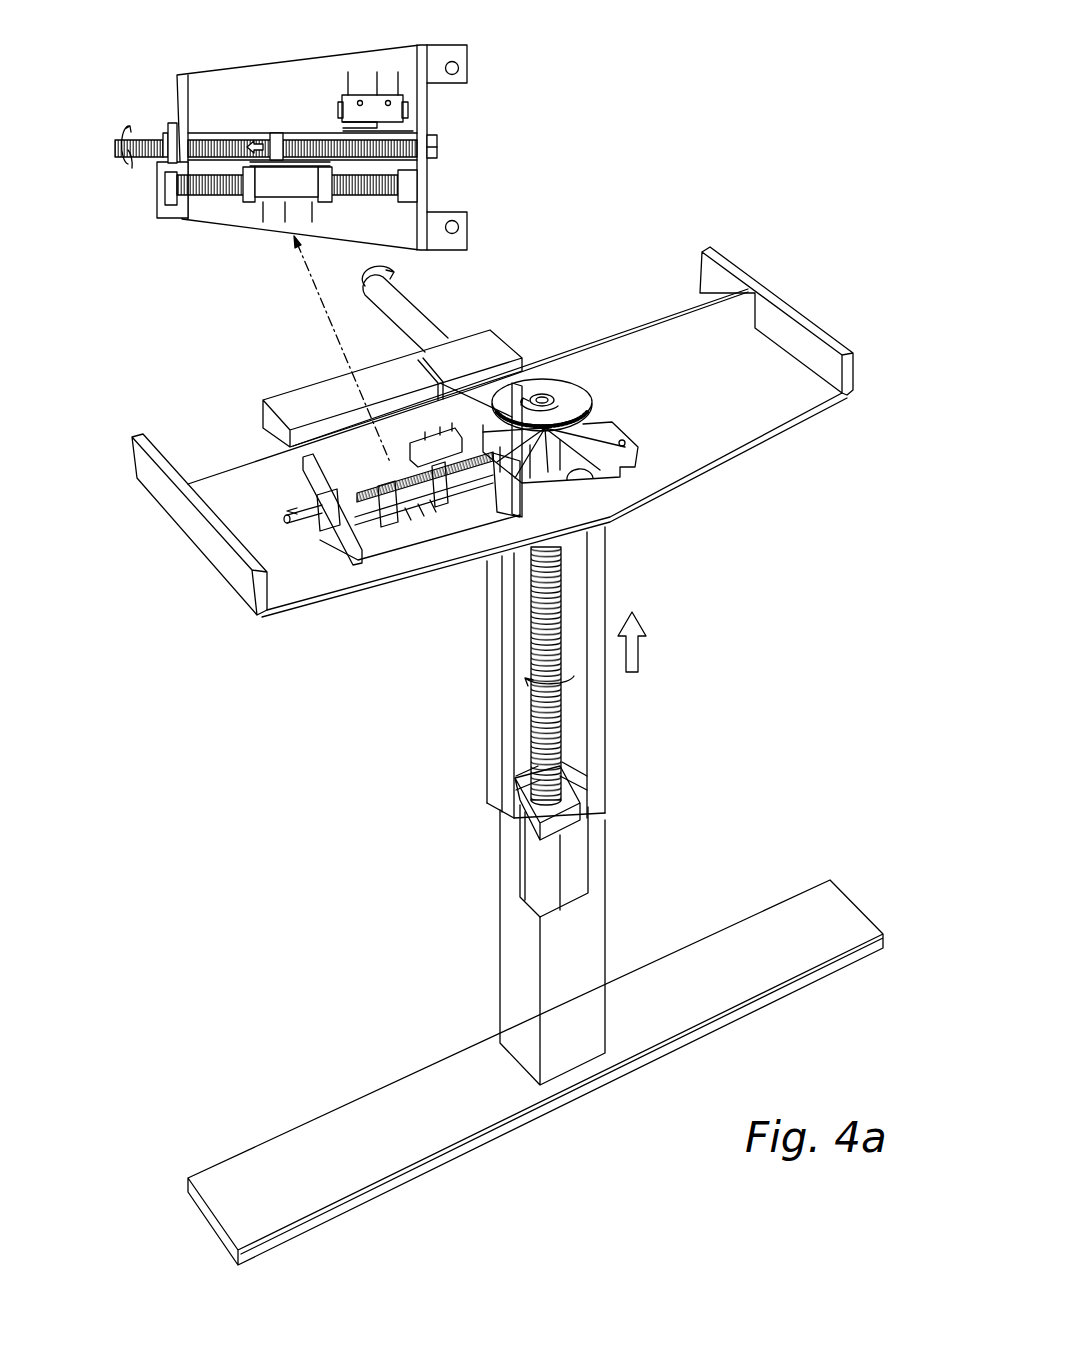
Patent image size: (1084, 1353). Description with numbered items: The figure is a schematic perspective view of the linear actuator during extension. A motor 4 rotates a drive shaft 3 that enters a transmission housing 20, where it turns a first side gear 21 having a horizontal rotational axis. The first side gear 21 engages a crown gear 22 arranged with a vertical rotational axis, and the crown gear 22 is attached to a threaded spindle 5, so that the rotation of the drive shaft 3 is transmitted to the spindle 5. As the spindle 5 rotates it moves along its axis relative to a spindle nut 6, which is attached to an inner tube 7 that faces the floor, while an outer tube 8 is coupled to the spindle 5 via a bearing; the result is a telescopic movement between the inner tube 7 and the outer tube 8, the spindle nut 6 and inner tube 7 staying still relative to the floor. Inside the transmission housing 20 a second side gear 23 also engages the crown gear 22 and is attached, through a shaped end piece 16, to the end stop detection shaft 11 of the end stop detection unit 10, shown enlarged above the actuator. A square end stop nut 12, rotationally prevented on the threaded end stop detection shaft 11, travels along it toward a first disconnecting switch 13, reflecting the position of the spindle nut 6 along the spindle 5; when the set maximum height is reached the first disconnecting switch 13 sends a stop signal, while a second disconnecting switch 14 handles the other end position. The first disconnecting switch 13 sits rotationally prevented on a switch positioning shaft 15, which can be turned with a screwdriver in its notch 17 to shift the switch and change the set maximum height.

The drive shaft 3 is at (428, 327).
The motor 4 is at (303, 402).
The spindle 5 is at (566, 712).
The spindle nut 6 is at (572, 820).
The inner tube 7 is at (508, 924).
The outer tube 8 is at (493, 705).
The end stop detection unit 10 is at (472, 103).
The end stop detection shaft 11 is at (307, 132).
The end stop nut 12 is at (272, 134).
The first disconnecting switch 13 is at (273, 205).
The second disconnecting switch 14 is at (363, 96).
The switch positioning shaft 15 is at (370, 197).
The end piece 16 is at (439, 145).
The notch 17 is at (153, 182).
The transmission housing 20 is at (640, 452).
The first side gear 21 is at (441, 377).
The crown gear 22 is at (548, 388).
The second side gear 23 is at (502, 487).